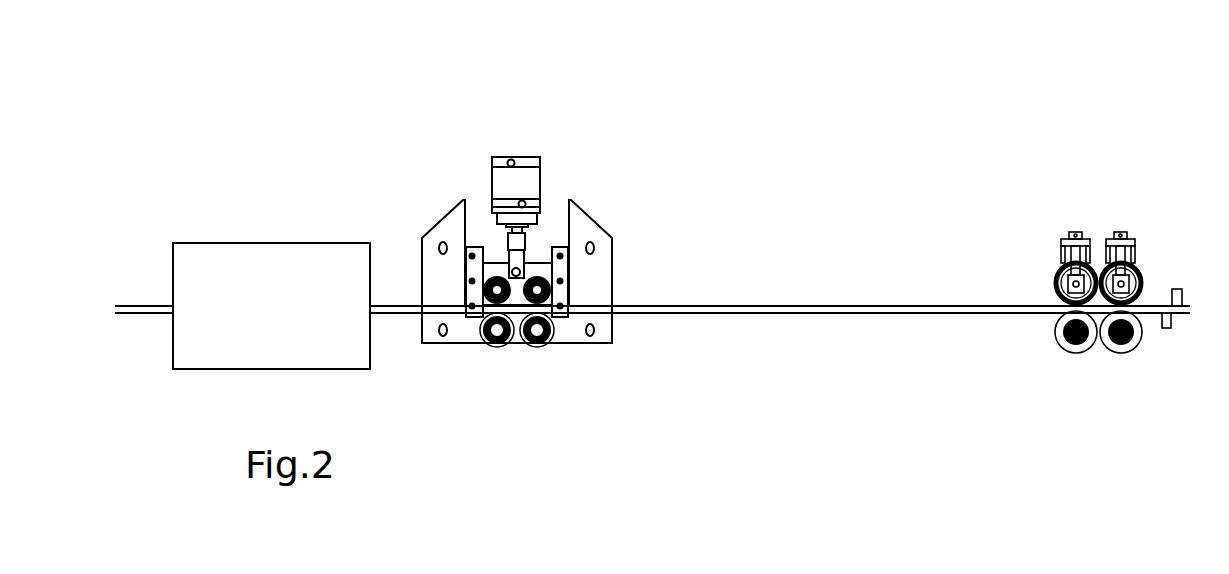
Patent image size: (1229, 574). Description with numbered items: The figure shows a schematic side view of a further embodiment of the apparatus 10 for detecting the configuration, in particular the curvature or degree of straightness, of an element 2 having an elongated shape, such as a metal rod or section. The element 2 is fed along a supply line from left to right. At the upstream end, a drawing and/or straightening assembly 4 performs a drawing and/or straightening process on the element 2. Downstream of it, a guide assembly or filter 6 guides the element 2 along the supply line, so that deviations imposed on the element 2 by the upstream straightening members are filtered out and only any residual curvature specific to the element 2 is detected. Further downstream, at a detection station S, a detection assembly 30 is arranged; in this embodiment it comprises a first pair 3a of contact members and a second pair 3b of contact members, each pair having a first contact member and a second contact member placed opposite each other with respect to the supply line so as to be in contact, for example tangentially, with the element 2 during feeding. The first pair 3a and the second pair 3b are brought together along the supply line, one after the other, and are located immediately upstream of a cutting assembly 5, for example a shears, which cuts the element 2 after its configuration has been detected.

The apparatus 10 is at (834, 108).
The element 2 is at (722, 305).
The drawing and/or straightening assembly 4 is at (216, 209).
The guide assembly or filter 6 is at (445, 146).
The detection assembly 30 is at (1123, 145).
The first pair of contact members 3a is at (1046, 209).
The second pair of contact members 3b is at (1152, 211).
The cutting assembly 5 is at (1192, 270).
The detection station S is at (1060, 397).